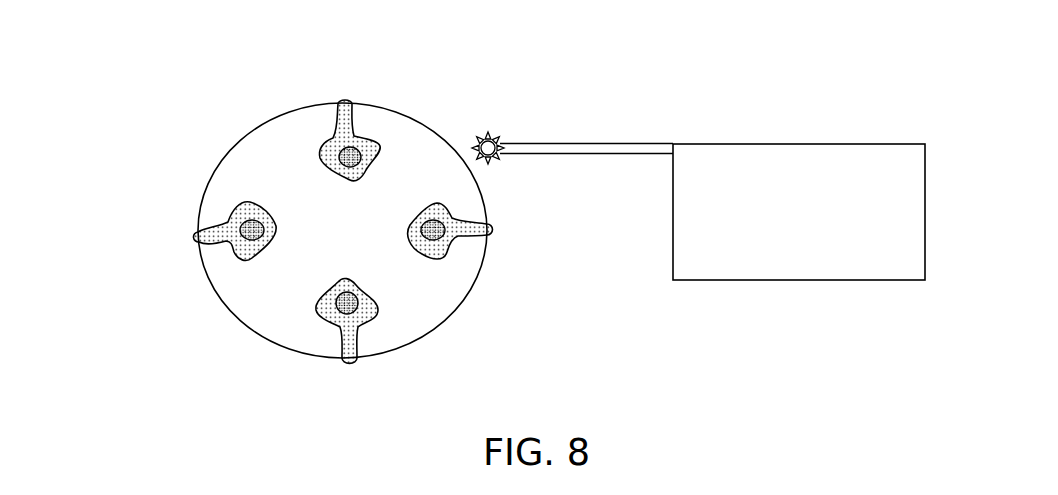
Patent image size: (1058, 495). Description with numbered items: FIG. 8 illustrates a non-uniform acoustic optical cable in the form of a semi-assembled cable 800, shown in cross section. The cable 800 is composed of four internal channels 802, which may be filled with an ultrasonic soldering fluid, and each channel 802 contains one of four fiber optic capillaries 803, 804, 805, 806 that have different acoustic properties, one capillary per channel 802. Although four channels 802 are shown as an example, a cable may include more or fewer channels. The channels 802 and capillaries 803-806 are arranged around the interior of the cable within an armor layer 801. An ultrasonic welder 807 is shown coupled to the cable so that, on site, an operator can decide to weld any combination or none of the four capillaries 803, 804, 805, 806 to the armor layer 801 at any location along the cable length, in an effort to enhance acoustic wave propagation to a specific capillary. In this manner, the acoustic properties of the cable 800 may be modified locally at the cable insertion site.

The semi-assembled cable 800 is at (185, 120).
The armor layer 801 is at (247, 135).
The internal channel 802 is at (287, 256).
The fiber optic capillary 803 is at (374, 148).
The fiber optic capillary 804 is at (453, 248).
The fiber optic capillary 805 is at (335, 308).
The fiber optic capillary 806 is at (243, 257).
The ultrasonic welder 807 is at (799, 285).